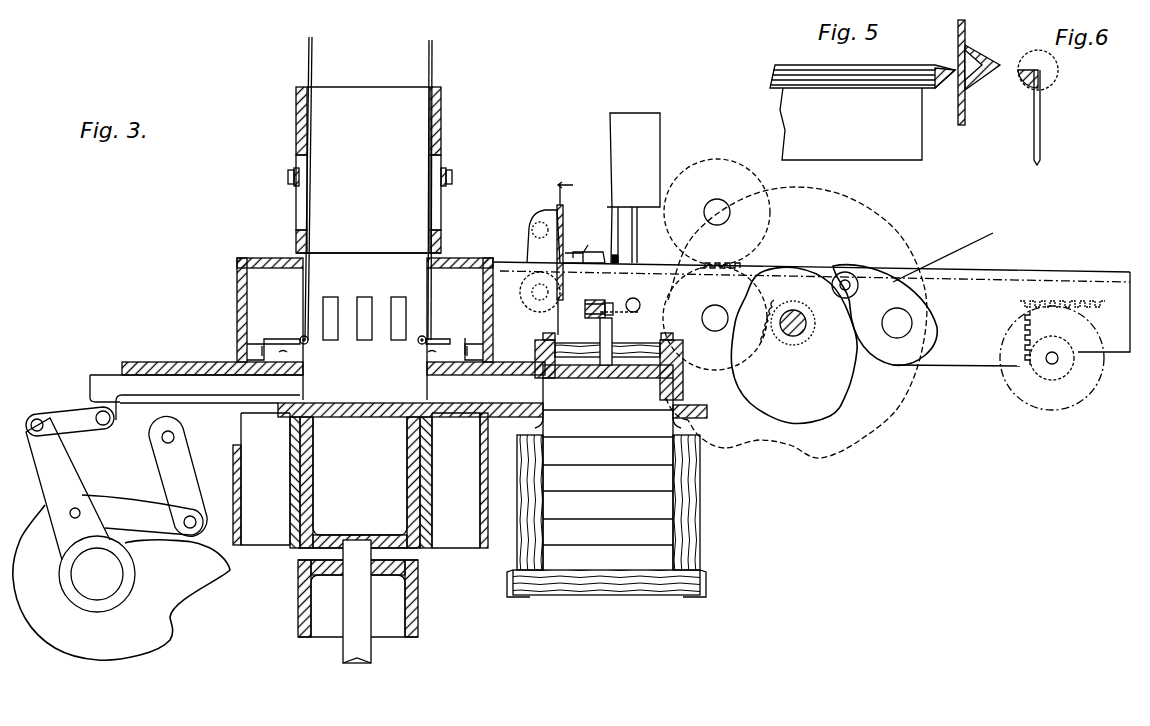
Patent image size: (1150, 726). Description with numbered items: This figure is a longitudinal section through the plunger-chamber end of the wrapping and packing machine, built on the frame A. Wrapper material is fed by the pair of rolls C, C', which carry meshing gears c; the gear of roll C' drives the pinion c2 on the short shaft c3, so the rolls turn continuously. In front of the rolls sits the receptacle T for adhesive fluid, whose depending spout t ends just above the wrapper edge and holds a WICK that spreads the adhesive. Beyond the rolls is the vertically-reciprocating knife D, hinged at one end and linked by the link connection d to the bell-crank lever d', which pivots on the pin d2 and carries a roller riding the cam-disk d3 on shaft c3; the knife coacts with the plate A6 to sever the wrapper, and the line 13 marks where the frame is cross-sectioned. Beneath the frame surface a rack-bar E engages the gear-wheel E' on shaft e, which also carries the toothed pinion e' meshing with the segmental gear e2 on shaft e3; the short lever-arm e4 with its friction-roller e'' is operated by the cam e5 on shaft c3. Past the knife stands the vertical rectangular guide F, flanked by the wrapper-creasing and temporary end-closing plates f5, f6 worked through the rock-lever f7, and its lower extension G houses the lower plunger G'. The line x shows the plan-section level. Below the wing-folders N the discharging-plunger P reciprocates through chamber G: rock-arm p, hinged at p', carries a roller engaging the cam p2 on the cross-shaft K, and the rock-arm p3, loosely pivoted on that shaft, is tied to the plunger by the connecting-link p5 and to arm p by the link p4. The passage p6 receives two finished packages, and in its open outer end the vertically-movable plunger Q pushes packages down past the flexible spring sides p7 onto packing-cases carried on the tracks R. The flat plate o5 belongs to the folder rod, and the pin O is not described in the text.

In FIG. 3, the vertical rectangular guide F is at (368, 170).
In FIG. 3, the wrapper-creasing and temporary end-closing plate f5 is at (312, 75).
In FIG. 3, the wrapper-creasing and temporary end-closing plate f6 is at (432, 75).
In FIG. 3, the rock-lever f7 is at (288, 177).
In FIG. 3, the frame A is at (256, 255).
In FIG. 3, the section line x x is at (358, 334).
In FIG. 3, the lower extension of the guide G is at (391, 400).
In FIG. 3, the lower plunger or presser G' is at (360, 538).
In FIG. 3, the pivot pin O is at (359, 334).
In FIG. 3, the wing-folders N is at (365, 343).
In FIG. 3, the flat plate o5 is at (366, 348).
In FIG. 5, the flat plate o5 is at (862, 112).
In FIG. 6, the flat plate o5 is at (1041, 107).
In FIG. 3, the plunger P is at (196, 391).
In FIG. 3, the rock-arm p is at (178, 476).
In FIG. 3, the hinge pivot p' is at (193, 435).
In FIG. 3, the cam p2 is at (121, 582).
In FIG. 3, the rock-arm p3 is at (68, 489).
In FIG. 3, the link p4 is at (142, 515).
In FIG. 3, the connecting-link p5 is at (70, 421).
In FIG. 3, the passage p6 is at (411, 389).
In FIG. 3, the flexible spring sides p7 is at (517, 426).
In FIG. 3, the cross-shaft K is at (97, 574).
In FIG. 3, the vertically-movable plunger Q is at (597, 380).
In FIG. 3, the horizontal tracks or ways R is at (603, 592).
In FIG. 3, the link connection d is at (532, 255).
In FIG. 3, the bell-crank lever d' is at (576, 300).
In FIG. 3, the pin d2 is at (633, 298).
In FIG. 3, the cam-disk d3 is at (814, 452).
In FIG. 3, the vertically-reciprocating knife D is at (563, 218).
In FIG. 3, the section line 13 13 is at (563, 251).
In FIG. 3, the plate A6 is at (570, 236).
In FIG. 3, the depending spout t is at (585, 251).
In FIG. 3, the receptacle for adhesive fluid T is at (640, 113).
In FIG. 3, the wick WICK is at (625, 261).
In FIG. 3, the roll C is at (717, 212).
In FIG. 3, the gear c is at (730, 262).
In FIG. 3, the roll C' is at (715, 318).
In FIG. 3, the pinion c2 is at (773, 336).
In FIG. 3, the short shaft c3 is at (800, 332).
In FIG. 3, the shaft e is at (1041, 337).
In FIG. 3, the toothed pinion e' is at (1052, 359).
In FIG. 3, the segmental gear e2 is at (956, 299).
In FIG. 3, the shaft e3 is at (898, 330).
In FIG. 3, the short lever-arm e4 is at (885, 315).
In FIG. 3, the cam e5 is at (794, 345).
In FIG. 3, the friction-roller e'' is at (846, 268).
In FIG. 3, the rack-bar E is at (1062, 297).
In FIG. 3, the gear-wheel E' is at (1057, 358).